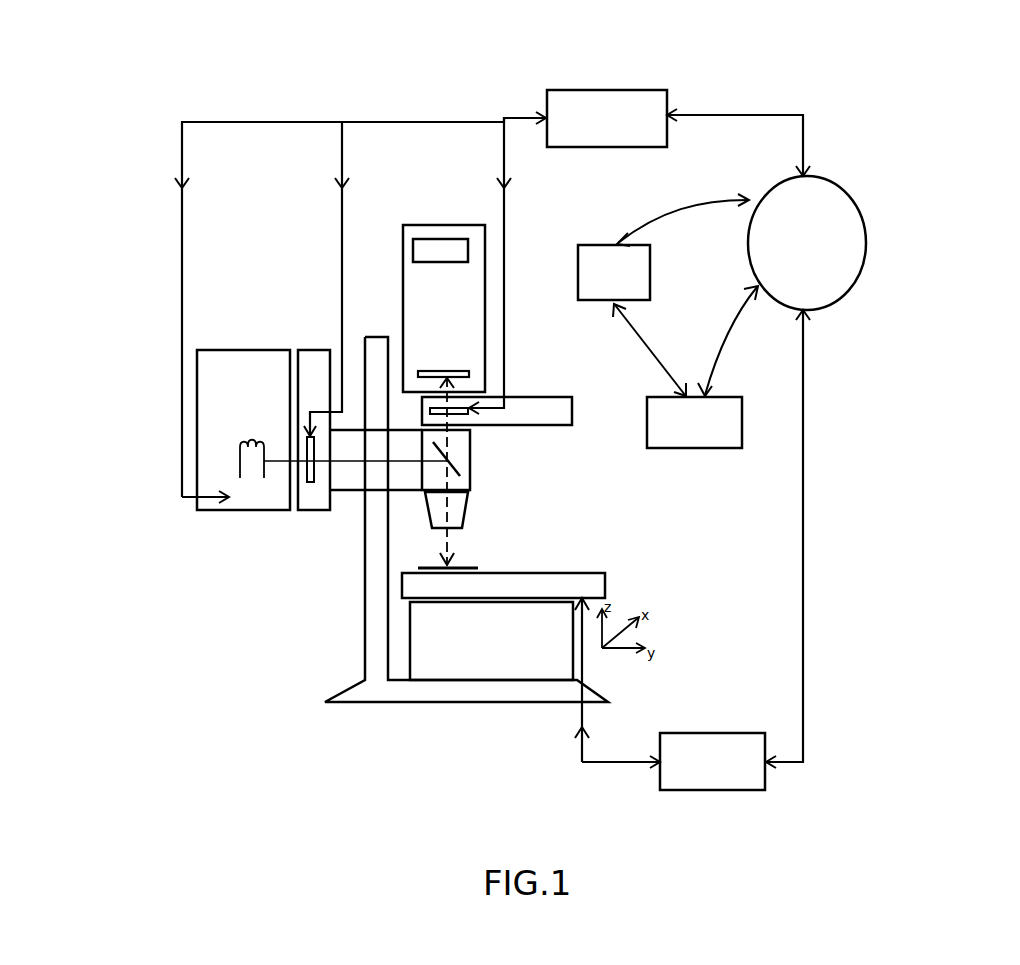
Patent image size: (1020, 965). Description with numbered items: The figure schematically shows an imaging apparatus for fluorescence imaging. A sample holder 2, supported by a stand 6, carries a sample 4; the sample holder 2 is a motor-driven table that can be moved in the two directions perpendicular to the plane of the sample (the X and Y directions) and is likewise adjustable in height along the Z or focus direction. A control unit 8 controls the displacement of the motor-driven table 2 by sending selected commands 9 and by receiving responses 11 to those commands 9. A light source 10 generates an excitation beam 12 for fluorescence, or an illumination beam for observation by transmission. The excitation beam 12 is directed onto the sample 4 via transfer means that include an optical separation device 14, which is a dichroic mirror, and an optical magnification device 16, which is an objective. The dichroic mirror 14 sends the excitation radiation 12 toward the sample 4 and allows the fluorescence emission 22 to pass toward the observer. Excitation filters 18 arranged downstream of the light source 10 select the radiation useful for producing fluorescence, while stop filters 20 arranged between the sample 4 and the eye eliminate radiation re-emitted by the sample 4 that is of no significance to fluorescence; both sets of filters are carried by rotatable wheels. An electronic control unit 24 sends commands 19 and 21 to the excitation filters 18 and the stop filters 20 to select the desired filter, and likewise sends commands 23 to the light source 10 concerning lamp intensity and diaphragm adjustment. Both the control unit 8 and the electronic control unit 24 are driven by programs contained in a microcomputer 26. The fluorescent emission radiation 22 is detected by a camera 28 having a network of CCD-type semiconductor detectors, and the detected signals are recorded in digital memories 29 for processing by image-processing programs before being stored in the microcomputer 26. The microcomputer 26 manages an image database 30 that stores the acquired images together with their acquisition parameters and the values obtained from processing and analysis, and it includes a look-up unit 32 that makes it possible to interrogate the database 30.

The sample holder 2 is at (540, 573).
The sample 4 is at (466, 568).
The stand 6 is at (363, 600).
The control unit 8 is at (723, 790).
The commands 9 is at (575, 738).
The light source 10 is at (237, 350).
The responses 11 is at (622, 762).
The excitation beam 12 is at (350, 468).
The optical separation device 14 is at (470, 477).
The optical magnification device 16 is at (468, 508).
The excitation filters 18 is at (302, 510).
The commands 19 is at (342, 222).
The stop filters 20 is at (470, 422).
The commands 21 is at (504, 277).
The fluorescence emission 22 is at (455, 450).
The commands 23 is at (182, 222).
The electronic control unit 24 is at (615, 90).
The microcomputer 26 is at (748, 245).
The camera 28 is at (432, 371).
The digital memories 29 is at (437, 239).
The image database 30 is at (703, 448).
The look-up unit 32 is at (586, 245).